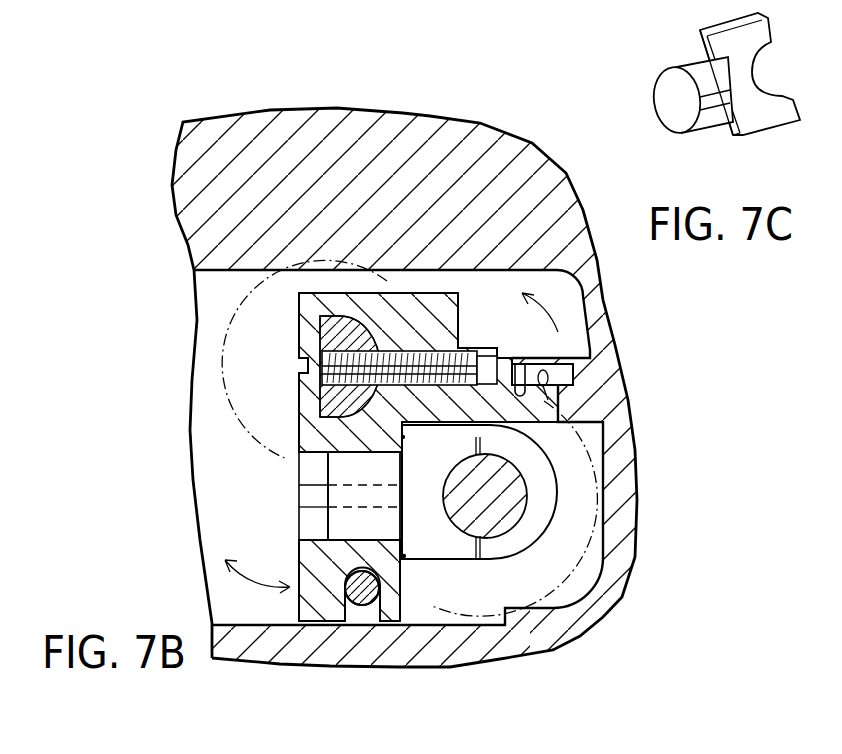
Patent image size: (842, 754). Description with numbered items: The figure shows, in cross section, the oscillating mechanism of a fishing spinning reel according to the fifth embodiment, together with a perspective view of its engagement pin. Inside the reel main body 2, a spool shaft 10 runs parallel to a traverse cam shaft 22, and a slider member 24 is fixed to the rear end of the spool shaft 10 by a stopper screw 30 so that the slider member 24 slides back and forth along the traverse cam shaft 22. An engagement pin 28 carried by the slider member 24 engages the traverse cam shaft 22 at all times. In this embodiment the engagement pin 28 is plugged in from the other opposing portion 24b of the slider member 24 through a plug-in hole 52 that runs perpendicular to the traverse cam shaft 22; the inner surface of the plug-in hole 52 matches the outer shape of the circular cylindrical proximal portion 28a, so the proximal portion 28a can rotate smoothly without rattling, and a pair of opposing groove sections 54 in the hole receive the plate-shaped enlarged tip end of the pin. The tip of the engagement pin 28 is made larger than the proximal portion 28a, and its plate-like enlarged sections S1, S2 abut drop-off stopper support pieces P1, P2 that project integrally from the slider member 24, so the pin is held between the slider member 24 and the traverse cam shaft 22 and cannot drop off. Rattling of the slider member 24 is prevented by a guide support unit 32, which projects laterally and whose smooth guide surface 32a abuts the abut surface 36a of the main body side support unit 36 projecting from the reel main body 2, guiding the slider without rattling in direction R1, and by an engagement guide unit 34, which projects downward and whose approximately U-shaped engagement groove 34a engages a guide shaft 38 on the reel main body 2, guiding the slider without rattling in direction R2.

In FIG. 7B, the reel main body 2 is at (544, 134).
In FIG. 7B, the spool shaft 10 is at (350, 318).
In FIG. 7B, the traverse cam shaft 22 is at (503, 520).
In FIG. 7B, the slider member 24 is at (326, 293).
In FIG. 7B, the other opposing portion 24b is at (298, 410).
In FIG. 7B, the engagement pin 28 is at (447, 559).
In FIG. 7C, the engagement pin 28 is at (783, 123).
In FIG. 7B, the proximal portion 28a is at (305, 527).
In FIG. 7C, the proximal portion 28a is at (683, 128).
In FIG. 7B, the stopper screw 30 is at (298, 330).
In FIG. 7B, the guide support unit 32 is at (565, 405).
In FIG. 7B, the guide surface 32a is at (546, 390).
In FIG. 7B, the engagement guide unit 34 is at (298, 602).
In FIG. 7B, the engagement groove 34a is at (350, 612).
In FIG. 7B, the main body side support unit 36 is at (567, 353).
In FIG. 7B, the abut surface 36a is at (522, 397).
In FIG. 7B, the guide shaft 38 is at (368, 606).
In FIG. 7B, the plug-in hole 52 is at (302, 464).
In FIG. 7B, the groove sections 54 is at (310, 494).
In FIG. 7B, the direction R1 is at (548, 307).
In FIG. 7B, the direction R2 is at (257, 588).
In FIG. 7B, the stopper support piece P1 is at (404, 438).
In FIG. 7B, the stopper support piece P2 is at (405, 556).
In FIG. 7C, the enlarged section S1 is at (697, 43).
In FIG. 7C, the enlarged section S2 is at (733, 135).